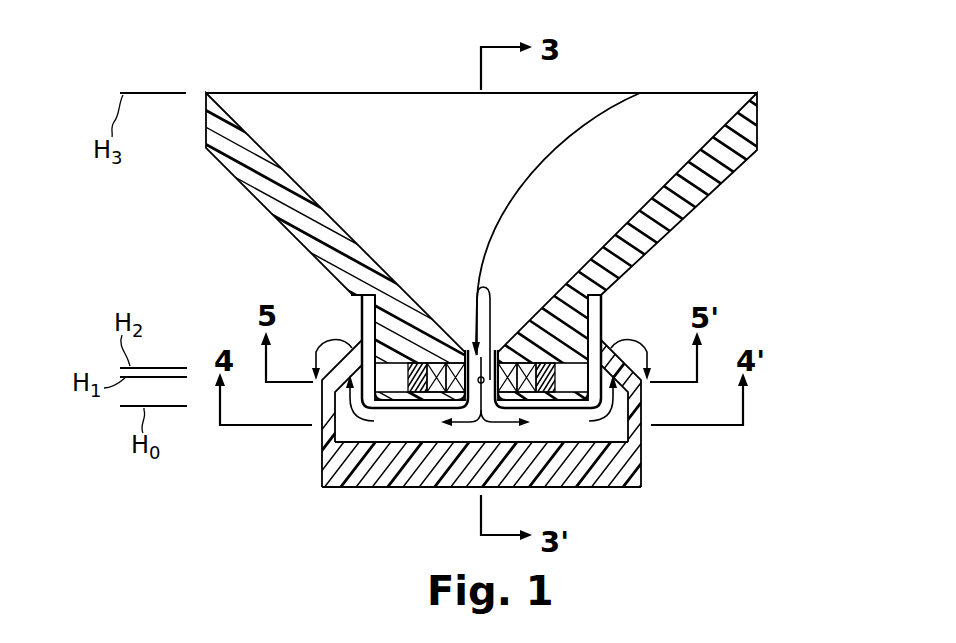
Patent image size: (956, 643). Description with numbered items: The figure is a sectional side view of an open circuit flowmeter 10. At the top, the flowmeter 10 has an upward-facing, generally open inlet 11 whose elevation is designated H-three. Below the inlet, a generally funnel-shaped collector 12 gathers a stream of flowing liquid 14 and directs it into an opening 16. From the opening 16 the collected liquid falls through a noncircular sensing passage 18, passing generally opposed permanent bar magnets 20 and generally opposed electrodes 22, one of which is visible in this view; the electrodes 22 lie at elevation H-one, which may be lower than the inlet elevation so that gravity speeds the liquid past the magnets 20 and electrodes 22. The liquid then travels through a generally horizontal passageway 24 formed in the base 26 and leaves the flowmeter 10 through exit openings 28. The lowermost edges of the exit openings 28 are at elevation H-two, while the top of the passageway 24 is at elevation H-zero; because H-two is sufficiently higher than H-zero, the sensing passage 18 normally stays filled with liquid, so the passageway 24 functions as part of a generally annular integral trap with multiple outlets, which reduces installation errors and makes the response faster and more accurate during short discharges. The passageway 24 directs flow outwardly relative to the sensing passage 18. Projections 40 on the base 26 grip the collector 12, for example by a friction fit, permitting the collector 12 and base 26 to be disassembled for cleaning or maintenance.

The flowmeter 10 is at (250, 70).
The inlet 11 is at (326, 92).
The collector 12 is at (759, 113).
The flowing liquid 14 is at (593, 115).
The opening 16 is at (491, 311).
The sensing passage 18 is at (462, 358).
The permanent bar magnets 20 is at (443, 362).
The electrodes 22 is at (490, 380).
The passageway 24 is at (404, 436).
The base 26 is at (643, 468).
The exit openings 28 is at (357, 343).
The projections 40 is at (604, 310).